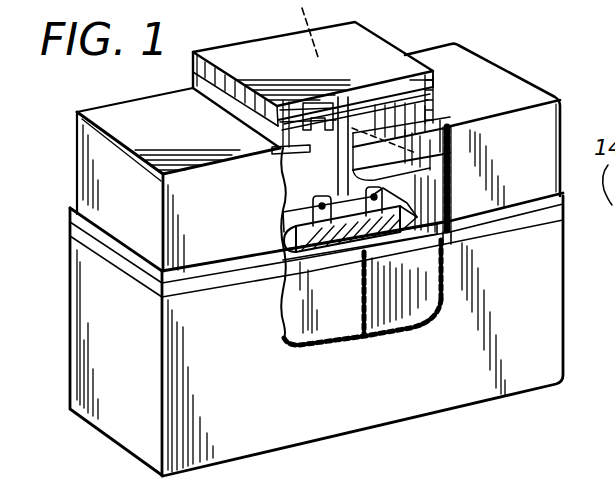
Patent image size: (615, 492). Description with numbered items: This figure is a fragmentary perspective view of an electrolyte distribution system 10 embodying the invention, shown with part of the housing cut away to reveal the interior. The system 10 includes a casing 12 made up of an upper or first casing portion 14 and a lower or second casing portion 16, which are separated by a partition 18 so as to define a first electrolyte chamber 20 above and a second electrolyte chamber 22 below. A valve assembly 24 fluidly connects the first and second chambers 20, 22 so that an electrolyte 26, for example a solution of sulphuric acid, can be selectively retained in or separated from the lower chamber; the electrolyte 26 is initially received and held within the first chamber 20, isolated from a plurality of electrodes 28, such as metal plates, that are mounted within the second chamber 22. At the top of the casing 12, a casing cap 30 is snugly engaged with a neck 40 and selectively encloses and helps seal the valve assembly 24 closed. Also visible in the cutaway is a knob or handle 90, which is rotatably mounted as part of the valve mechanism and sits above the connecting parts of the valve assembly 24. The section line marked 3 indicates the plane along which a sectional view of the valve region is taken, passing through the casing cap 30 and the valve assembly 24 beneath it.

The section line 3- 3 is at (302, 8).
The electrolyte distribution system 10 is at (470, 14).
The casing 12 is at (498, 70).
The upper or first enclosure member or casing portion 14 is at (563, 108).
The lower or second enclosure or casing portion member 16 is at (343, 430).
The partition 18 is at (458, 178).
The first electrolyte chamber 20 is at (432, 120).
The second electrolyte chamber 22 is at (381, 333).
The valve assembly 24 is at (297, 103).
The electrolyte or electrolytic fluid or medium 26 is at (452, 165).
The electrodes 28 is at (431, 320).
The casing cap 30 is at (373, 44).
The neck 40 is at (199, 83).
The knob or handle 90 is at (357, 84).